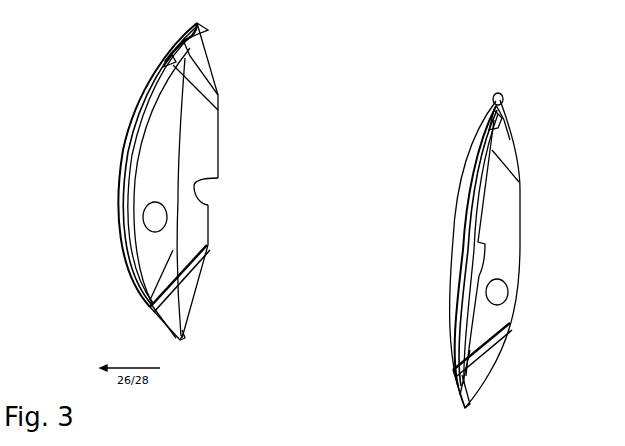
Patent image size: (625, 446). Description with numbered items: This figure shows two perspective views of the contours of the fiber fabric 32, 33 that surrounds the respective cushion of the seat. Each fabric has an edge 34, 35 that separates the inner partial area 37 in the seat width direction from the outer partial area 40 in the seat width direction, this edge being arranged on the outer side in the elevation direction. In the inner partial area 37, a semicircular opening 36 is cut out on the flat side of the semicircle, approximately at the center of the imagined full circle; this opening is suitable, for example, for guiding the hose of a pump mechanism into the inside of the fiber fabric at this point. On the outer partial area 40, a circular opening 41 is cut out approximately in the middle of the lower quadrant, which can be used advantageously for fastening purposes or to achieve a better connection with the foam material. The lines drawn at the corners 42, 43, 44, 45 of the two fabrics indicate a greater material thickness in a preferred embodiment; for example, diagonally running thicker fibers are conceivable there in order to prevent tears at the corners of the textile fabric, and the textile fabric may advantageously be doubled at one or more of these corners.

The fiber fabric 32 is at (135, 177).
The fiber fabric 33 is at (466, 243).
The edge 34 is at (127, 125).
The edge 35 is at (456, 198).
The semicircular opening 36 is at (202, 193).
The inner partial area 37 is at (207, 142).
The outer partial area 40 is at (505, 247).
The circular opening 41 is at (500, 294).
The corner 42 is at (163, 62).
The corner 43 is at (140, 303).
The corner 44 is at (494, 100).
The corner 45 is at (472, 400).